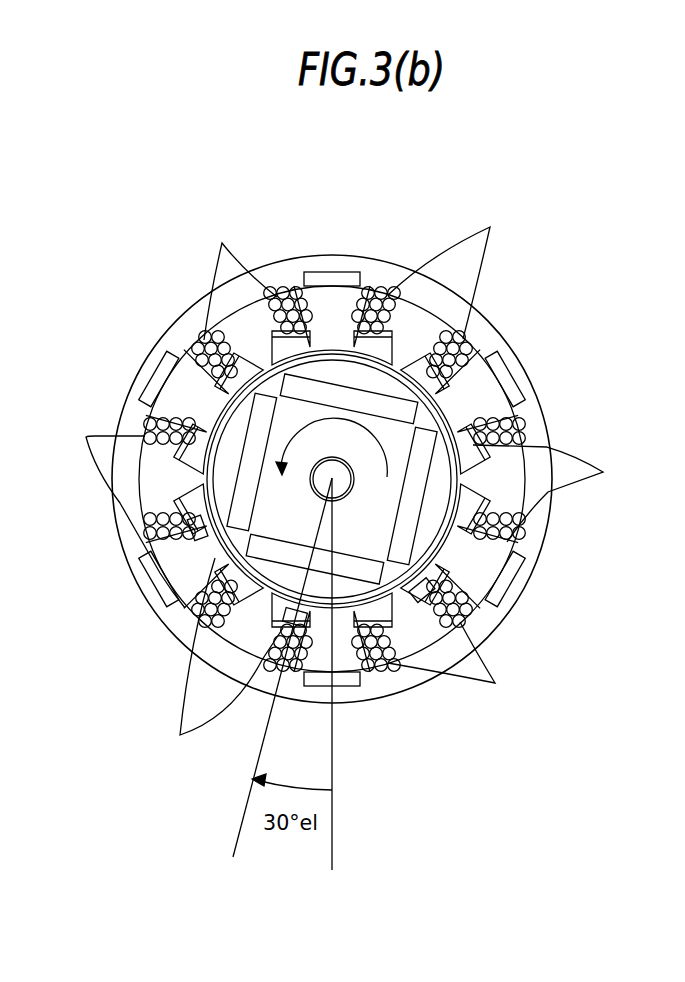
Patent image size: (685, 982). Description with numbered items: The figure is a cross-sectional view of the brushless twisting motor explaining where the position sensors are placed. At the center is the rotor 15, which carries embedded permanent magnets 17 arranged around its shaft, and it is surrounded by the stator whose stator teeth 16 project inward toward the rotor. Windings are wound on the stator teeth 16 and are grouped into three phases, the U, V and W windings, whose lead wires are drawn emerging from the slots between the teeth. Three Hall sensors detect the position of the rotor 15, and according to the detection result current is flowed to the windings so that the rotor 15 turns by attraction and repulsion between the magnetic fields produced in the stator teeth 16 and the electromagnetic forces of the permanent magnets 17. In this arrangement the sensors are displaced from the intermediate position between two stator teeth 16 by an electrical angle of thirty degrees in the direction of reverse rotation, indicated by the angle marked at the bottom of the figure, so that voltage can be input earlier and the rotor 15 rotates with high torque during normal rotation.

The rotor 15 is at (293, 417).
The stator teeth 16 is at (200, 573).
The permanent magnets 17 is at (400, 410).
The stator winding U is at (331, 484).
The stator winding V is at (360, 464).
The stator winding W is at (341, 516).